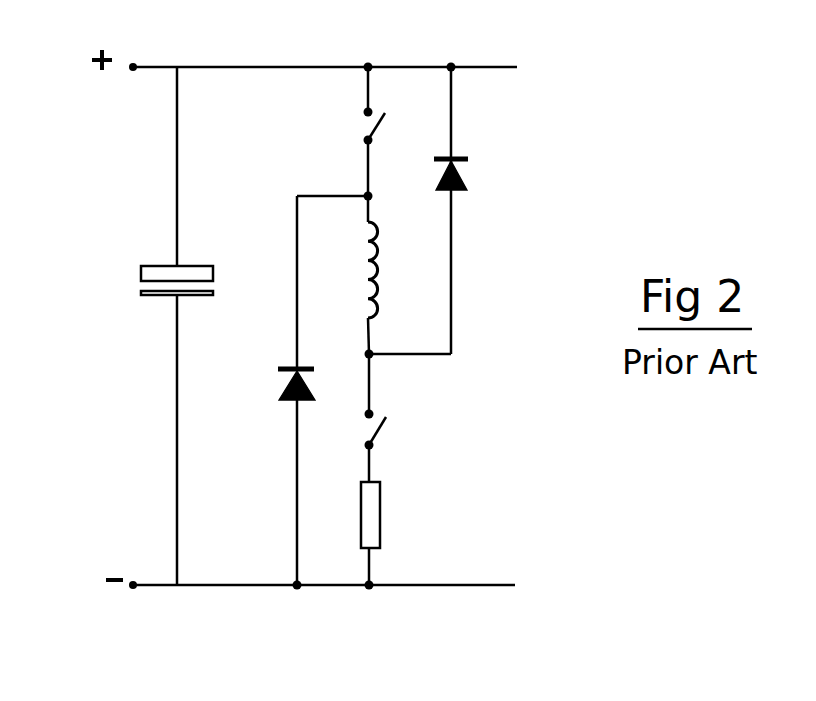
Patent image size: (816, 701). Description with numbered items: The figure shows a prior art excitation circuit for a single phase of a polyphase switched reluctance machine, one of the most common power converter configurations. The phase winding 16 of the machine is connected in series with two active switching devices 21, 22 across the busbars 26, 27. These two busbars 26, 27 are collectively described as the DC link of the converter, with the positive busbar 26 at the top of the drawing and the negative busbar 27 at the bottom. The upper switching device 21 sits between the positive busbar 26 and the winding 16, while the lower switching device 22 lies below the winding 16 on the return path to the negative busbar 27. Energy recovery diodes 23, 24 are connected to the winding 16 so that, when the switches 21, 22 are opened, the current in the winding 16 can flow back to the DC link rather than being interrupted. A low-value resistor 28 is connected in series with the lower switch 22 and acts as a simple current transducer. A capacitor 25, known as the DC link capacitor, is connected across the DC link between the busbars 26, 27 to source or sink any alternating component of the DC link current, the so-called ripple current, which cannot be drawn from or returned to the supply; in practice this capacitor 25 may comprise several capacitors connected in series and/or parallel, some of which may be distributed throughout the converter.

The phase winding 16 is at (388, 248).
The active switching device 21 is at (364, 127).
The active switching device 22 is at (388, 430).
The energy recovery diode 23 is at (473, 171).
The energy recovery diode 24 is at (280, 378).
The capacitor 25 is at (135, 284).
The busbar 26 is at (262, 67).
The busbar 27 is at (242, 585).
The resistor 28 is at (380, 512).